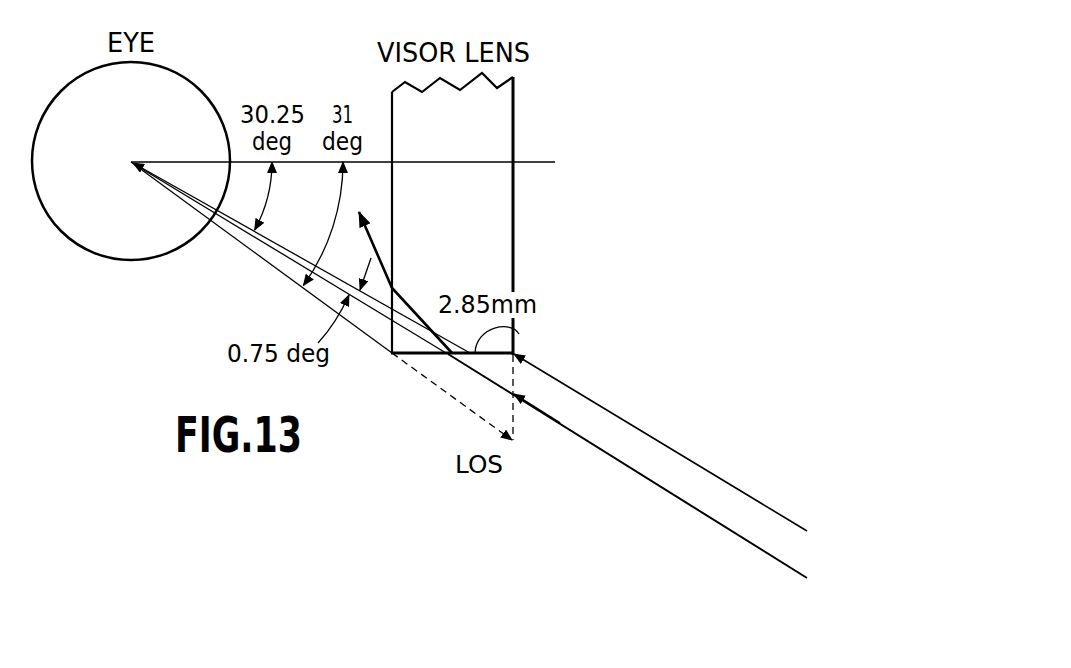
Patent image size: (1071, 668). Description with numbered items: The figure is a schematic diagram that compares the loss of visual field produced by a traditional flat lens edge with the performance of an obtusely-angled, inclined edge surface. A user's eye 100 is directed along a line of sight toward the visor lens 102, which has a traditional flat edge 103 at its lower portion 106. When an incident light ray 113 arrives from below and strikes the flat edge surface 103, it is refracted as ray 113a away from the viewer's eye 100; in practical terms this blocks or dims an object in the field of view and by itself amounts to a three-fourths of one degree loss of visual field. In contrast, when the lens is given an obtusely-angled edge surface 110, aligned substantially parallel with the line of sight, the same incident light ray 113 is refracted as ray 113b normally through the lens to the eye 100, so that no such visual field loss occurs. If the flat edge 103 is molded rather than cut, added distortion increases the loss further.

The eye 100 is at (131, 261).
The visor lens 102 is at (514, 121).
The flat edge 103 is at (519, 331).
The lower portion 106 is at (517, 418).
The obtusely-angled edge surface 110 is at (448, 395).
The incident light ray 113 is at (647, 471).
The refracted ray 113a is at (377, 250).
The refracted ray 113b is at (372, 313).